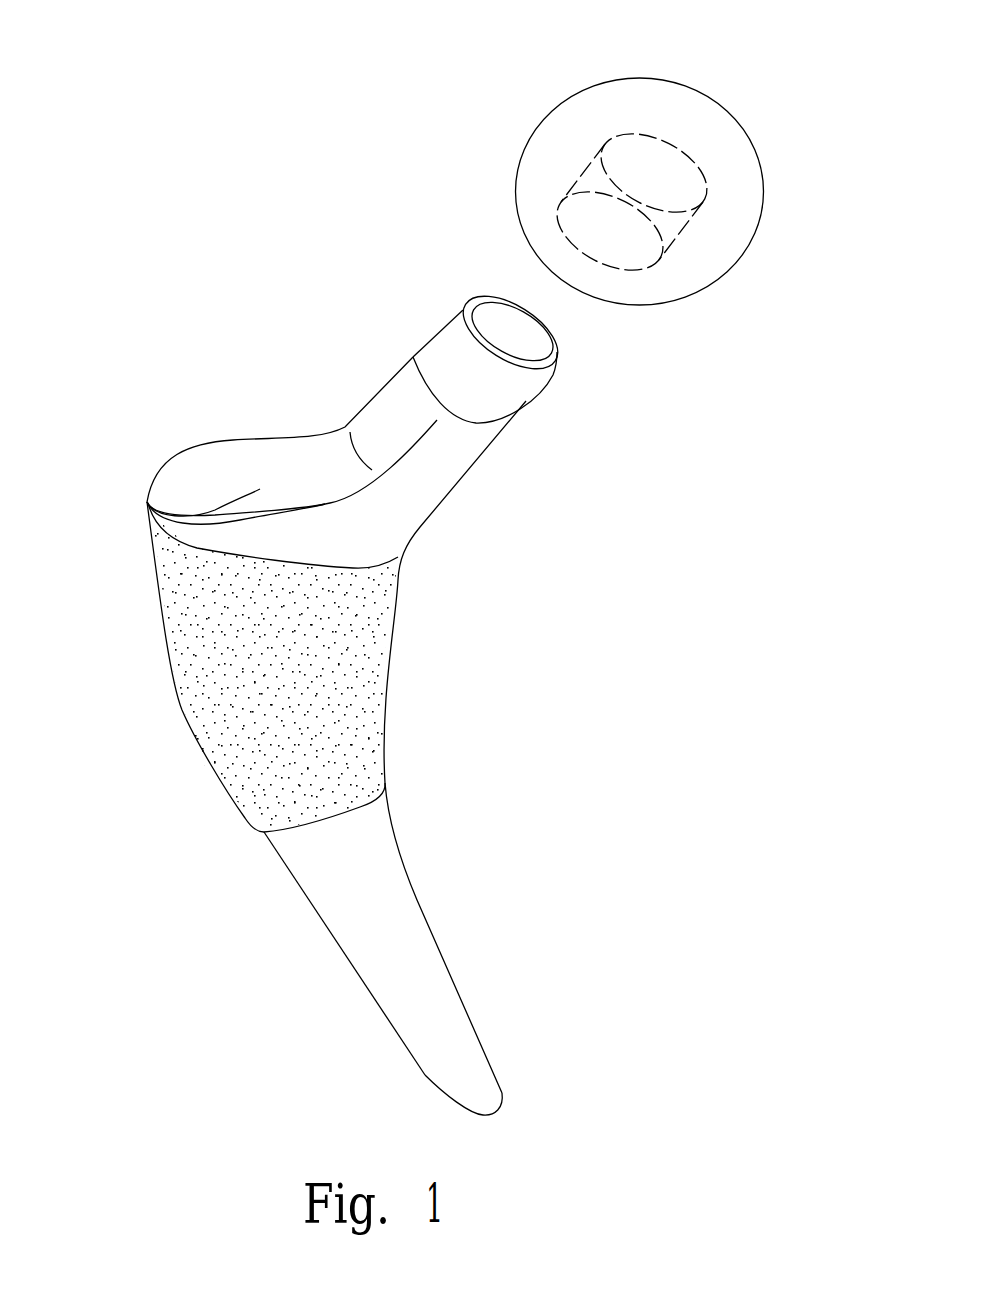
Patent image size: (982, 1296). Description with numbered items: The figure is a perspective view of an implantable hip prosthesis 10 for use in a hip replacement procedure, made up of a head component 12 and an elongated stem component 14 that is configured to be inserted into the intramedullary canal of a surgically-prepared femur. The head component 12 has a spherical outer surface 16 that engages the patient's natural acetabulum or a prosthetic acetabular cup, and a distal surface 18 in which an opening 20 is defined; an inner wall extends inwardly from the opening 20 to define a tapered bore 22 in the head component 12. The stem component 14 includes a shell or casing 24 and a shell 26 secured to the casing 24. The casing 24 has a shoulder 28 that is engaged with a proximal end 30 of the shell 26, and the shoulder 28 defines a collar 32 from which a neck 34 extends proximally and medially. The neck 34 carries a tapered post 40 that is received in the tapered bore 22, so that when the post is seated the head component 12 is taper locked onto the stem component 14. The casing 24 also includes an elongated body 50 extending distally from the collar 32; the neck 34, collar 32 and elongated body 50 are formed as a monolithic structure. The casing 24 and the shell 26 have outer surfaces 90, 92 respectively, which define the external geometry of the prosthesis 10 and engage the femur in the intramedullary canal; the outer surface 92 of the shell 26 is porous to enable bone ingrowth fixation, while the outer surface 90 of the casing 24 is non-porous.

The implantable hip prosthesis 10 is at (168, 226).
The head component 12 is at (748, 94).
The stem component 14 is at (418, 650).
The spherical outer surface 16 is at (732, 249).
The distal surface 18 is at (518, 235).
The opening 20 is at (660, 264).
The bore 22 is at (578, 178).
The casing 24 is at (395, 537).
The shell 26 is at (373, 755).
The shoulder 28 is at (193, 542).
The proximal end 30 is at (383, 596).
The collar 32 is at (148, 500).
The neck 34 is at (307, 445).
The tapered post 40 is at (524, 390).
The elongated body 50 is at (388, 855).
The outer surface of the casing 90 is at (410, 912).
The outer surface of the shell 92 is at (368, 698).